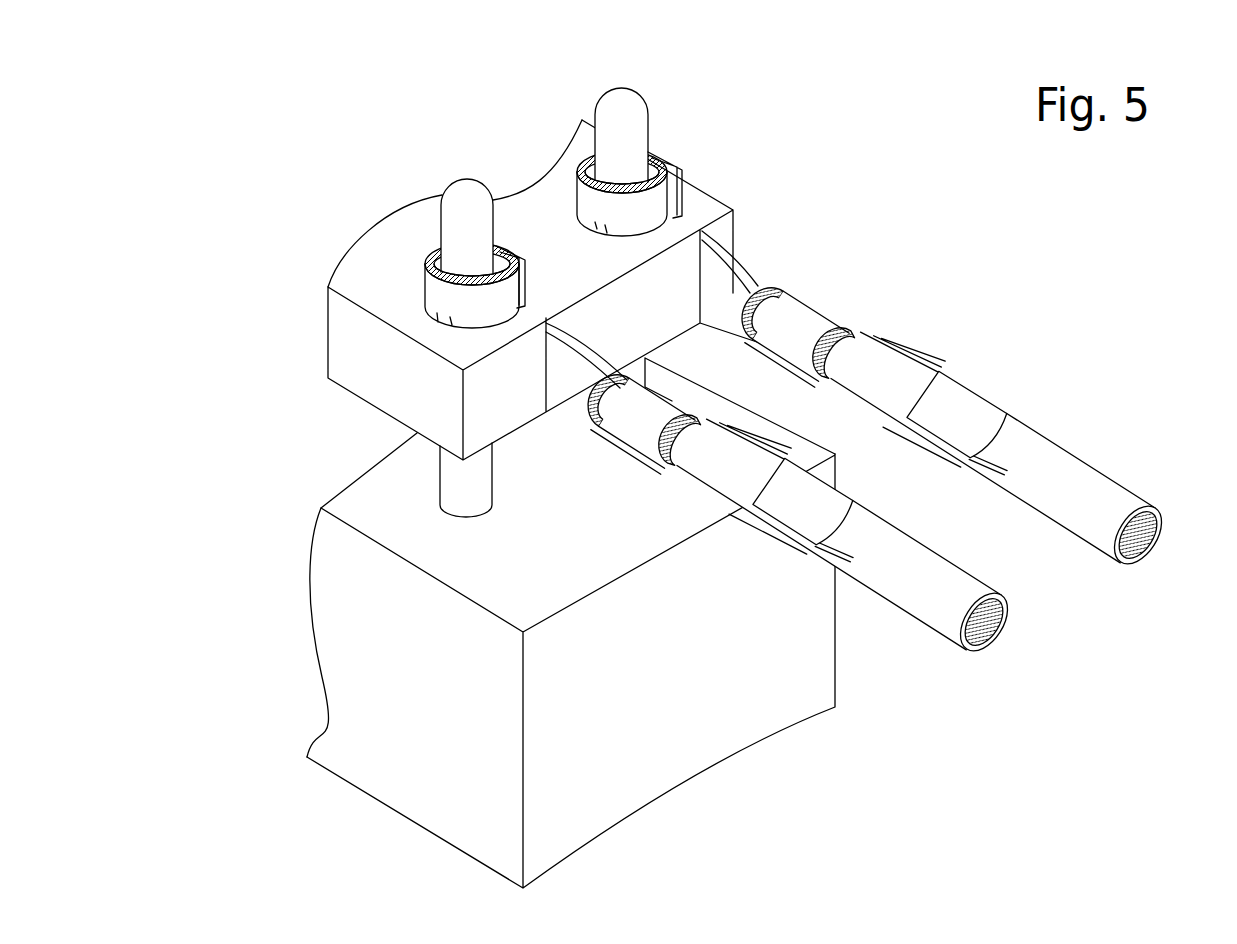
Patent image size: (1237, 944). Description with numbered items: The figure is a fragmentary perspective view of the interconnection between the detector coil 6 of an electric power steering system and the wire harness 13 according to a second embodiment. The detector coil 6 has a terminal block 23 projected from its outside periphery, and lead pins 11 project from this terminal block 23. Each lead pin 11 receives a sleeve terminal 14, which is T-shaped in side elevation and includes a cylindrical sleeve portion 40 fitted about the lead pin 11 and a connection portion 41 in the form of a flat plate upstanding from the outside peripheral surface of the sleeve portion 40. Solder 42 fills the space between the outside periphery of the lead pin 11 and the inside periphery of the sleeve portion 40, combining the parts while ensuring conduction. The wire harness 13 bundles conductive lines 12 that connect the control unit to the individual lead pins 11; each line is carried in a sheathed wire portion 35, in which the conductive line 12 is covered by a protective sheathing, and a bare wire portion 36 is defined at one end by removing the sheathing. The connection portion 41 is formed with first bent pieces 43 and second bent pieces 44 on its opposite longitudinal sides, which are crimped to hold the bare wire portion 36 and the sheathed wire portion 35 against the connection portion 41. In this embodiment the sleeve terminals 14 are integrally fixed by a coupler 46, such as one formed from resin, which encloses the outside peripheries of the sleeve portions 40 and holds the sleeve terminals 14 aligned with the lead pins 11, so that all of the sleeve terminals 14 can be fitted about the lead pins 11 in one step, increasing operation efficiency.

The detector coil 6 is at (732, 457).
The lead pin 11 is at (464, 178).
The conductive line 12 is at (1153, 540).
The wire harness 13 is at (948, 515).
The sleeve terminal 14 is at (513, 177).
The terminal block 23 is at (677, 755).
The sheathed wire portion 35 is at (1077, 467).
The bare wire portion 36 is at (765, 298).
The sleeve portion 40 is at (422, 292).
The connection portion 41 is at (727, 283).
The solder 42 is at (437, 237).
The first bent piece 43 is at (812, 308).
The second bent piece 44 is at (962, 395).
The coupler 46 is at (350, 343).